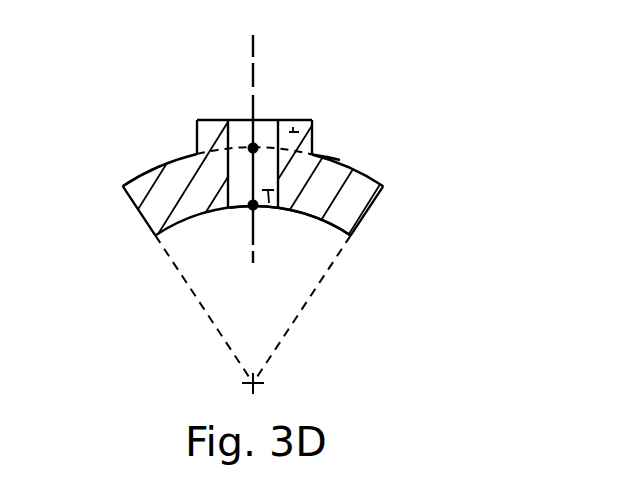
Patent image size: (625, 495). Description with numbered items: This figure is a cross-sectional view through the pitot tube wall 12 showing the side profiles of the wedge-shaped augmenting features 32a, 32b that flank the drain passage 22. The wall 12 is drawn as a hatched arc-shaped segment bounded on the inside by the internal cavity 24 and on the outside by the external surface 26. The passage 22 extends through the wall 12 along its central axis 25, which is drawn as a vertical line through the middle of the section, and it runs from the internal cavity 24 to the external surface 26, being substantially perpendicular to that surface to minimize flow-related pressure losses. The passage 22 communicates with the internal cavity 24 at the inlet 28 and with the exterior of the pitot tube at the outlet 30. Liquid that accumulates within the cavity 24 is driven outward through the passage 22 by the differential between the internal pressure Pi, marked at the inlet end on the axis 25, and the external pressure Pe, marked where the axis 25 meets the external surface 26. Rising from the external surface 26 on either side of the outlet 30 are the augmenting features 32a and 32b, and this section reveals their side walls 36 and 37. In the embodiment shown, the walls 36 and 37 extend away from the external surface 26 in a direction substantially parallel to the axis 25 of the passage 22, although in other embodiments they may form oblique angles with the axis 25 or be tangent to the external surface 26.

The wall 12 is at (395, 163).
The passage 22 is at (268, 208).
The internal cavity 24 is at (261, 323).
The central axis 25 is at (256, 55).
The external surface 26 is at (145, 177).
The inlet 28 is at (266, 226).
The outlet 30 is at (235, 95).
The augmenting feature 32a is at (312, 140).
The augmenting feature 32b is at (297, 130).
The side wall 36 is at (312, 149).
The side wall 37 is at (195, 141).
The external pressure Pe is at (256, 147).
The internal pressure Pi is at (249, 209).